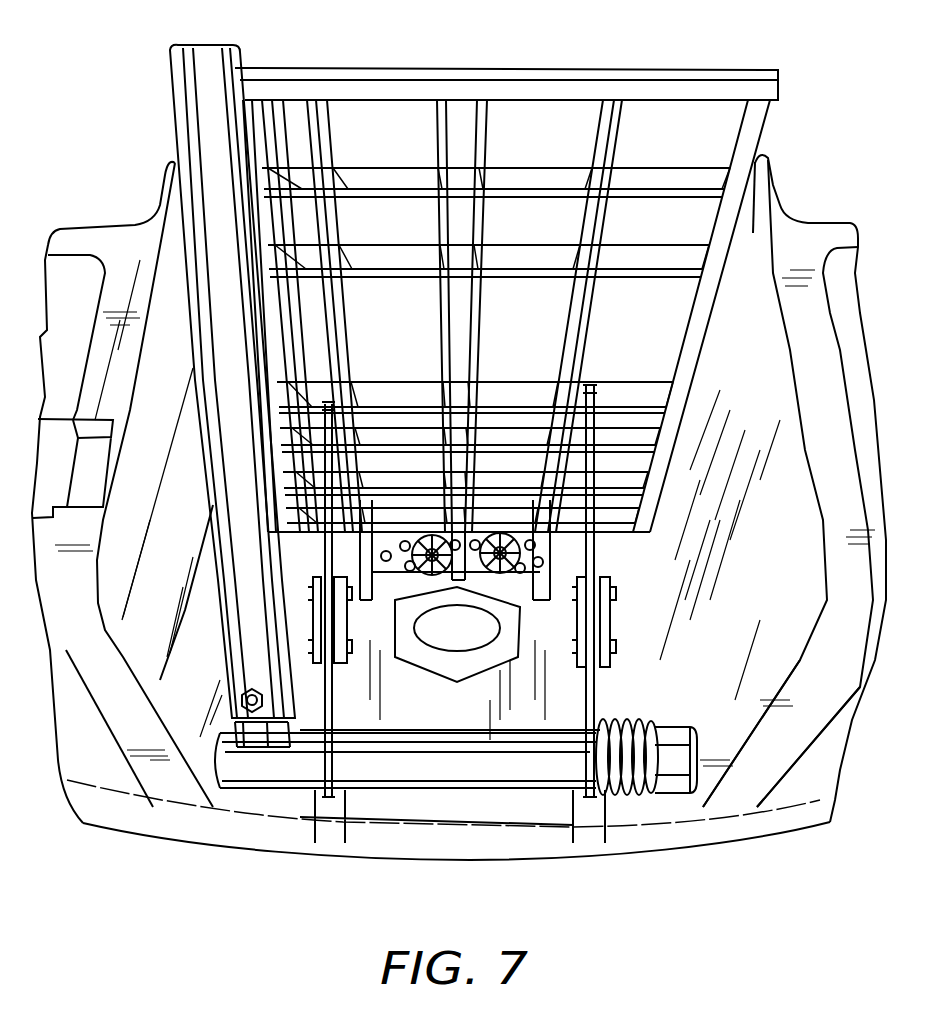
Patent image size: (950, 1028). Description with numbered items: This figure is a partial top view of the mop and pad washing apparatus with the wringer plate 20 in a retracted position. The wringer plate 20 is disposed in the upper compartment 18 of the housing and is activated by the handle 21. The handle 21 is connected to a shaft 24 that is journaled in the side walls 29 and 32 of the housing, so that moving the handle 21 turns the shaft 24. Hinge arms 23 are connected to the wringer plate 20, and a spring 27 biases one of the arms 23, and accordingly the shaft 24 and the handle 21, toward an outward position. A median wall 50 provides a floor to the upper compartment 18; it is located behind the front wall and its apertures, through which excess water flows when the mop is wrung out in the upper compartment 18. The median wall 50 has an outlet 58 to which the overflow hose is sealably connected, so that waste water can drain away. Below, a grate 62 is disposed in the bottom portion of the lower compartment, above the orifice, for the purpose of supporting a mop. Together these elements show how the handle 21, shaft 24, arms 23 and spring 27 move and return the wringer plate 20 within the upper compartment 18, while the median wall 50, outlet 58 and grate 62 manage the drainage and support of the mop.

The upper compartment 18 is at (767, 160).
The wringer plate 20 is at (531, 70).
The handle 21 is at (168, 106).
The hinge arms 23 is at (577, 697).
The shaft 24 is at (413, 783).
The spring 27 is at (628, 795).
The side wall 29 is at (837, 657).
The side wall 32 is at (113, 713).
The median wall 50 is at (527, 713).
The outlet 58 is at (452, 653).
The grate 62 is at (525, 530).